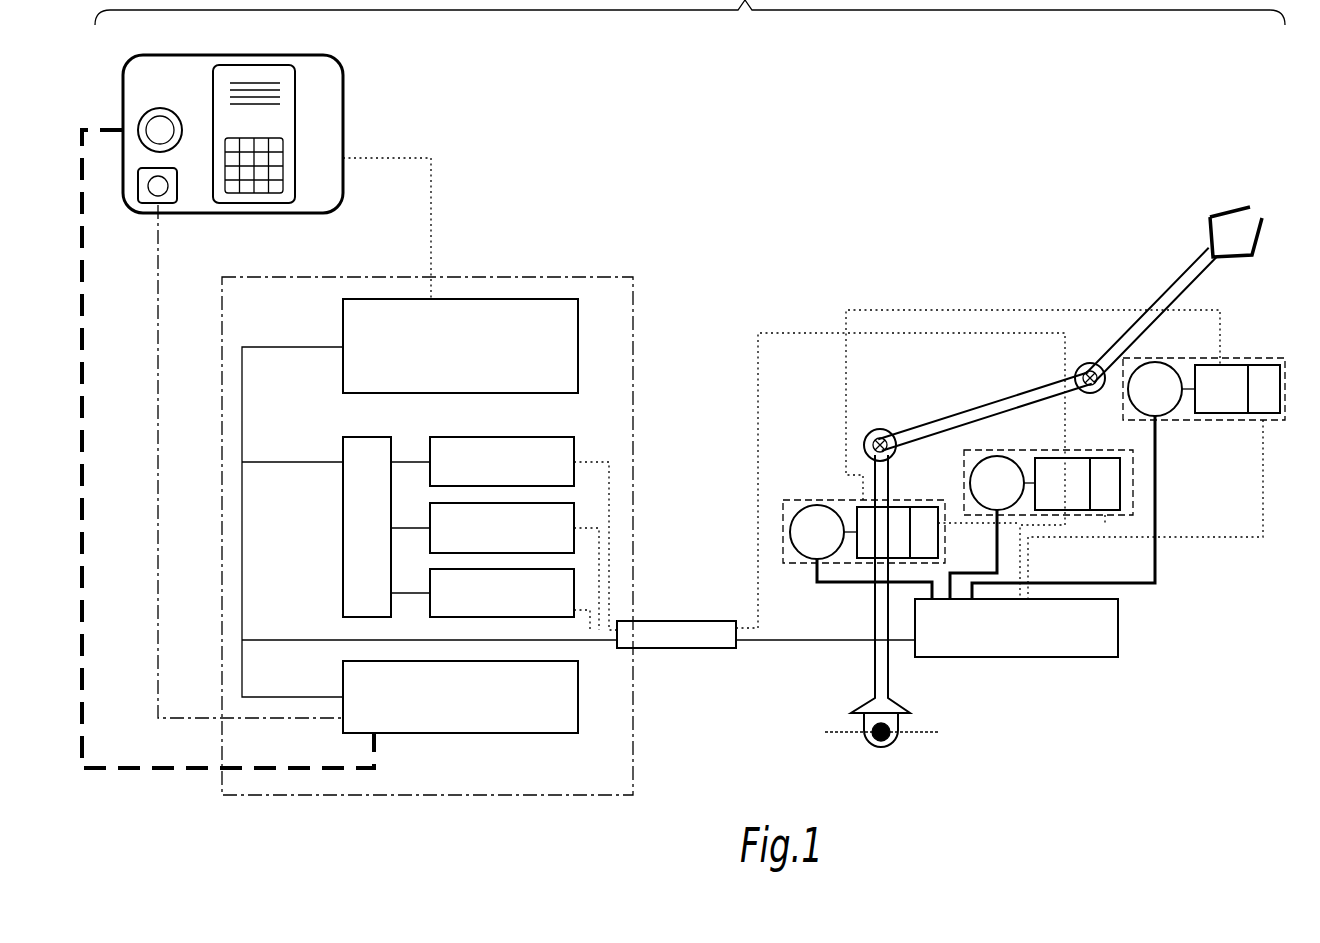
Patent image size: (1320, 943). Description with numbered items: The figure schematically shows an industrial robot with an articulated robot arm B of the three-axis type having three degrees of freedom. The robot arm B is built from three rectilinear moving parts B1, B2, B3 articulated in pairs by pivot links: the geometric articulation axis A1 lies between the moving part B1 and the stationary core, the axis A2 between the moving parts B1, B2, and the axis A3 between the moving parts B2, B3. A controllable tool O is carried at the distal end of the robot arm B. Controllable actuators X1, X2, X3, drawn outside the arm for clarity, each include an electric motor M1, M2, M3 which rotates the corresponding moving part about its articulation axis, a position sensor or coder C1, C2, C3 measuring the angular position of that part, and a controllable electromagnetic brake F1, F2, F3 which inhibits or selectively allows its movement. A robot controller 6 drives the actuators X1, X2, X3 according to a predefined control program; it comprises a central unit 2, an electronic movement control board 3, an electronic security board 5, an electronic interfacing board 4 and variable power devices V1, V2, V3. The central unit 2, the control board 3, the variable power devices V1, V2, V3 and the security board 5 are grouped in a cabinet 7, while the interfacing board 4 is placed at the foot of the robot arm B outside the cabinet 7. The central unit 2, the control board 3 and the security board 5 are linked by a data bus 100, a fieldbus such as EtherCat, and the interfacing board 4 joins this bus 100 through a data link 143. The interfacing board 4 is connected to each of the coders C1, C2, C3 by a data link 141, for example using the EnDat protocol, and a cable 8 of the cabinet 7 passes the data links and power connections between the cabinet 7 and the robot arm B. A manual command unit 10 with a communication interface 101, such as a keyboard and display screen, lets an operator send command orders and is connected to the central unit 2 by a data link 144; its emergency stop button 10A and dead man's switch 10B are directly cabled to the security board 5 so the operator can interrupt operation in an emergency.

The manual command unit 10 is at (352, 104).
The emergency stop button 10A is at (153, 190).
The dead man's switch 10B is at (157, 126).
The communication interface 101 is at (256, 80).
The data link 144 is at (431, 207).
The cabinet 7 is at (548, 277).
The data bus 100 is at (242, 436).
The central unit 2 is at (460, 346).
The electronic movement control board 3 is at (386, 527).
The variable power device V1 is at (523, 533).
The variable power device V2 is at (514, 566).
The variable power device V3 is at (510, 599).
The electronic security board 5 is at (460, 697).
The cable 8 is at (841, 490).
The electronic interfacing board 4 is at (1016, 628).
The data link 143 is at (783, 640).
The robot controller 6 is at (895, 658).
The data link 141 is at (856, 582).
The controllable actuator X1 is at (829, 496).
The controllable actuator X2 is at (999, 444).
The controllable actuator X3 is at (1263, 353).
The position sensor C1 is at (823, 532).
The electric motor M1 is at (883, 532).
The electromagnetic brake F1 is at (924, 532).
The position sensor C2 is at (1002, 483).
The electric motor M2 is at (1062, 484).
The electromagnetic brake F2 is at (1105, 484).
The position sensor C3 is at (1161, 389).
The electric motor M3 is at (1221, 389).
The electromagnetic brake F3 is at (1264, 389).
The geometric articulation axis A1 is at (891, 741).
The geometric articulation axis A2 is at (868, 434).
The geometric articulation axis A3 is at (1088, 370).
The moving part B1 is at (893, 685).
The moving part B2 is at (983, 410).
The moving part B3 is at (1190, 280).
The articulated robot arm B is at (1138, 260).
The controllable tool O is at (1232, 215).